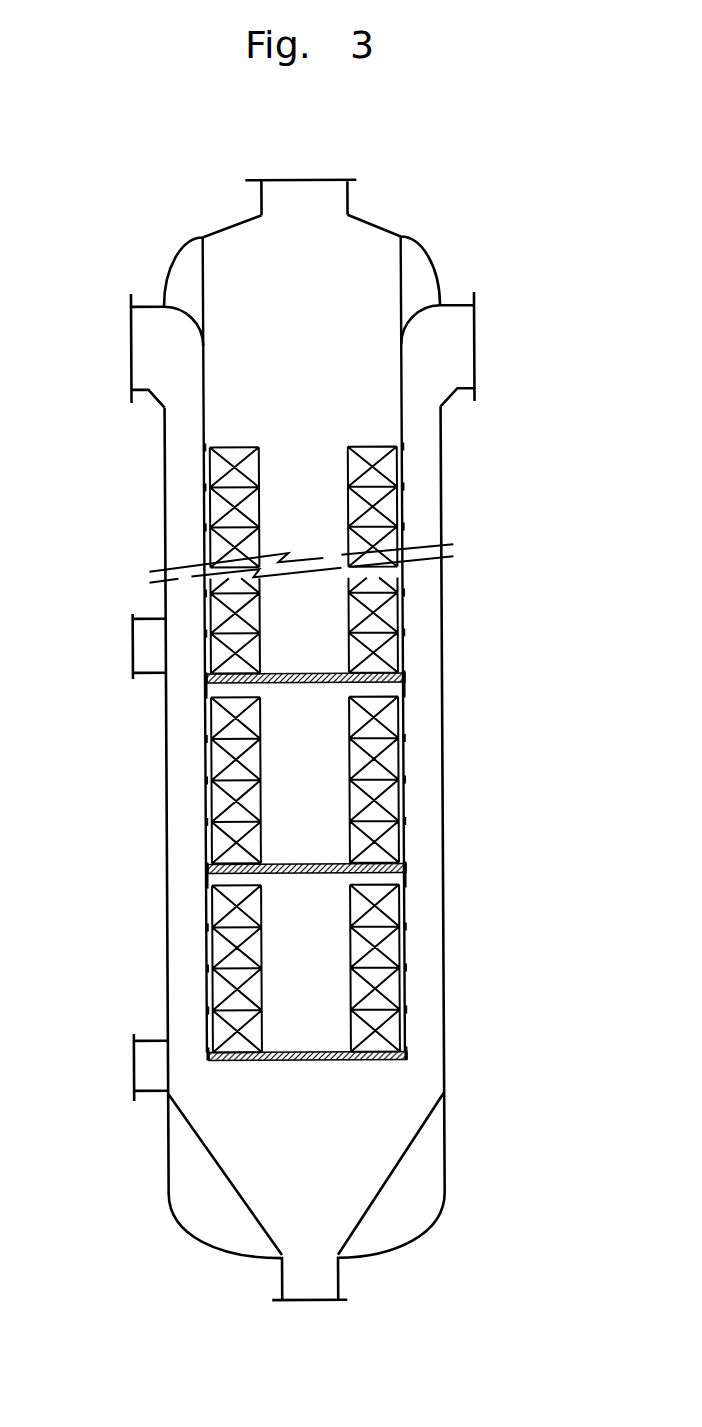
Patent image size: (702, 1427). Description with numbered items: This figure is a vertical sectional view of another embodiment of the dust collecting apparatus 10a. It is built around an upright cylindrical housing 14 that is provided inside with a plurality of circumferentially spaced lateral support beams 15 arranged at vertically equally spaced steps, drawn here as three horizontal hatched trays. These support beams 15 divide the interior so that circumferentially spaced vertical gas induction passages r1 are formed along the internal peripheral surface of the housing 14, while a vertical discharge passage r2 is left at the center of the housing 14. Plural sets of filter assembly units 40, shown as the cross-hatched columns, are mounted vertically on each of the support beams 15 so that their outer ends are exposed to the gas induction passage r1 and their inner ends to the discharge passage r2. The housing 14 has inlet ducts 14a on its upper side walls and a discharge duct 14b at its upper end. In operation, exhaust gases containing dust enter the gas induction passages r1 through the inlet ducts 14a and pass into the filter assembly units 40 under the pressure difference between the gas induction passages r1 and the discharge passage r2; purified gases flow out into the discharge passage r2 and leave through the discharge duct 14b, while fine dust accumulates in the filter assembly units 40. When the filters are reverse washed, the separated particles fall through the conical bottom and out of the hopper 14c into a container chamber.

The reactor 10a is at (443, 655).
The cylindrical housing 14 is at (164, 817).
The inlet ducts 14a is at (474, 360).
The discharge duct 14b is at (322, 180).
The hopper 14c is at (305, 1307).
The lateral support beams 15 is at (303, 1062).
The filter assembly units 40 is at (405, 1027).
The gas induction passages r1 is at (191, 658).
The discharge passage r2 is at (327, 752).